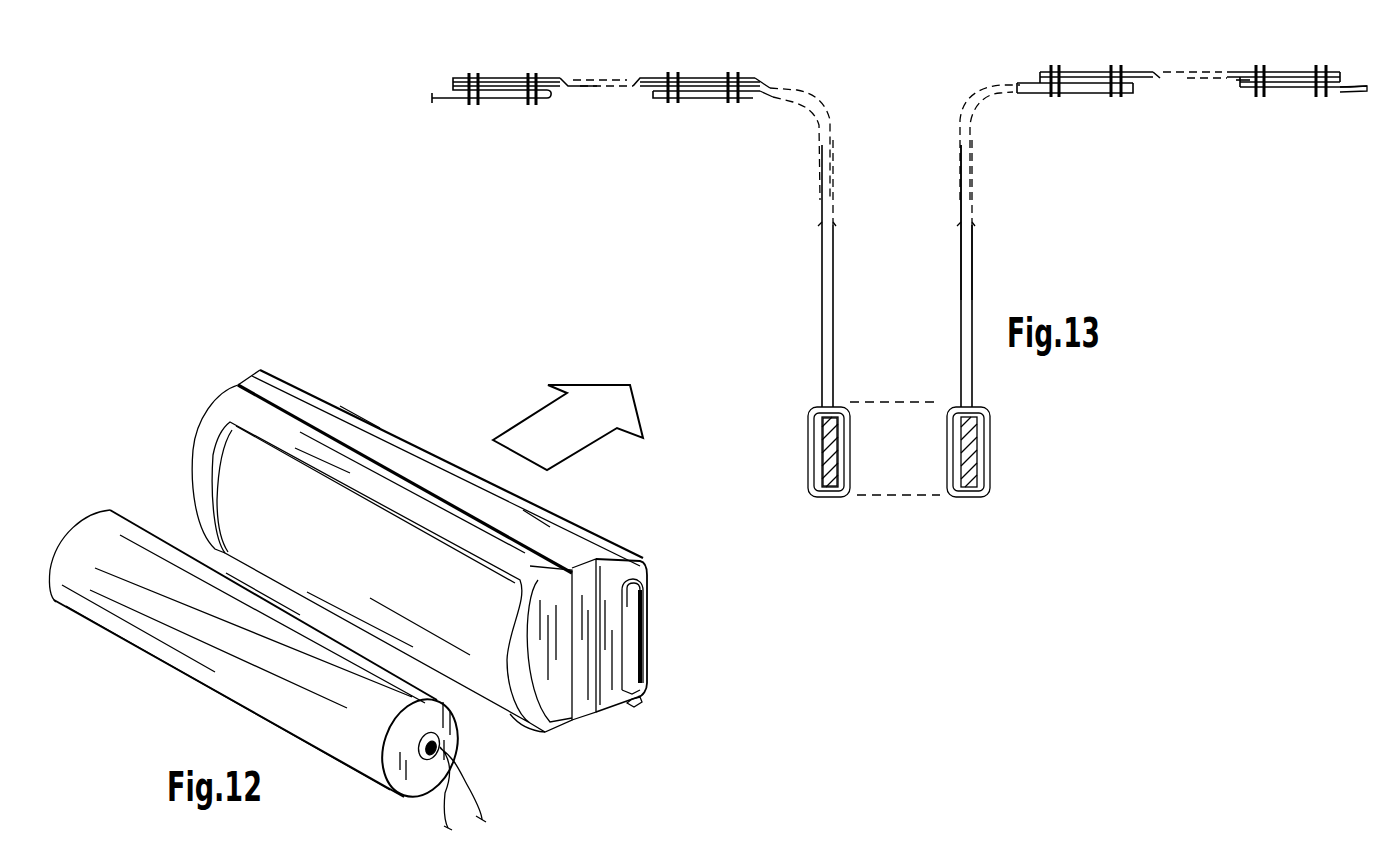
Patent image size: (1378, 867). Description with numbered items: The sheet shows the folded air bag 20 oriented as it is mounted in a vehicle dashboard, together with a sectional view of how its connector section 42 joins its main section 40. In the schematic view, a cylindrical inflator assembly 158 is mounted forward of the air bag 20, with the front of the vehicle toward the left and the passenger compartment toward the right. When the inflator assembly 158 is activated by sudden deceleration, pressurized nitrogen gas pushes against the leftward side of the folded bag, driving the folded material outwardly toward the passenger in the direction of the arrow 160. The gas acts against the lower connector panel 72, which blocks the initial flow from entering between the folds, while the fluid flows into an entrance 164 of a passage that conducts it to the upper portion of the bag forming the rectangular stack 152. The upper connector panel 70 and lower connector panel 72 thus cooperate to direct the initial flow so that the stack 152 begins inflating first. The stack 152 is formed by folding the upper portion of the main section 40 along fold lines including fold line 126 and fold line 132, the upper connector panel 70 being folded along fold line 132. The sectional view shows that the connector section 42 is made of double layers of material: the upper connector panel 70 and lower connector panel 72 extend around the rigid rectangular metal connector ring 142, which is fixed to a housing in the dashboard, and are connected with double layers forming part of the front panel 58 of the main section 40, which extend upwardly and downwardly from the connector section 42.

In FIG. 12, the air bag 20 is at (626, 543).
In FIG. 13, the air bag 20 is at (789, 154).
In FIG. 13, the main section 40 is at (1257, 54).
In FIG. 13, the connector section 42 is at (999, 279).
In FIG. 13, the front panel 58 is at (1357, 93).
In FIG. 13, the upper connector panel 70 is at (983, 373).
In FIG. 12, the lower connector panel 72 is at (503, 713).
In FIG. 13, the lower connector panel 72 is at (820, 370).
In FIG. 12, the fold line 126 is at (641, 700).
In FIG. 12, the fold line 132 is at (613, 712).
In FIG. 13, the connector ring 142 is at (830, 467).
In FIG. 12, the rectangular stack 152 is at (647, 640).
In FIG. 12, the inflator assembly 158 is at (115, 548).
In FIG. 12, the arrow 160 is at (542, 428).
In FIG. 12, the entrance 164 is at (363, 517).